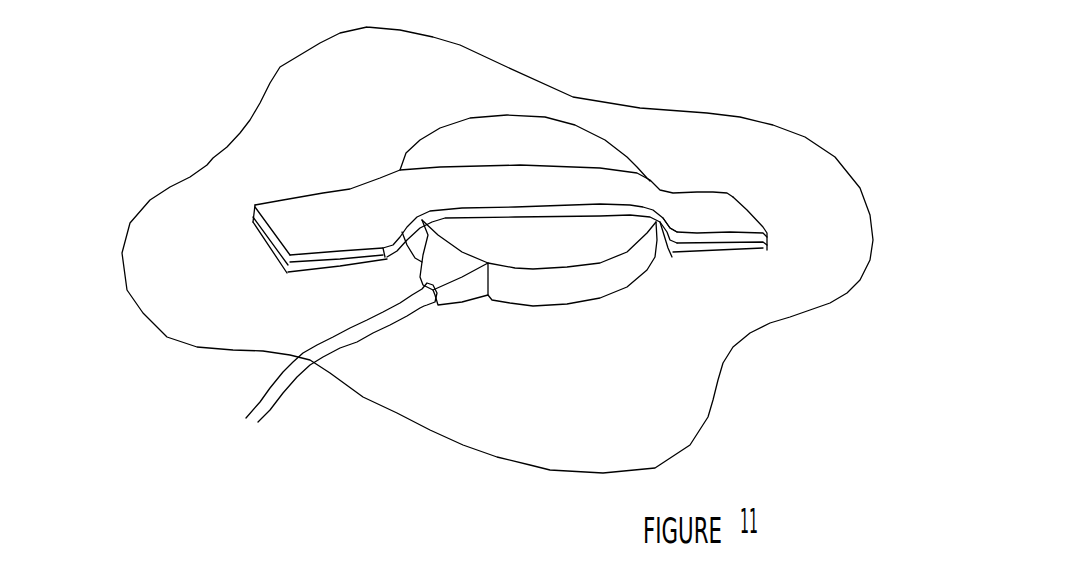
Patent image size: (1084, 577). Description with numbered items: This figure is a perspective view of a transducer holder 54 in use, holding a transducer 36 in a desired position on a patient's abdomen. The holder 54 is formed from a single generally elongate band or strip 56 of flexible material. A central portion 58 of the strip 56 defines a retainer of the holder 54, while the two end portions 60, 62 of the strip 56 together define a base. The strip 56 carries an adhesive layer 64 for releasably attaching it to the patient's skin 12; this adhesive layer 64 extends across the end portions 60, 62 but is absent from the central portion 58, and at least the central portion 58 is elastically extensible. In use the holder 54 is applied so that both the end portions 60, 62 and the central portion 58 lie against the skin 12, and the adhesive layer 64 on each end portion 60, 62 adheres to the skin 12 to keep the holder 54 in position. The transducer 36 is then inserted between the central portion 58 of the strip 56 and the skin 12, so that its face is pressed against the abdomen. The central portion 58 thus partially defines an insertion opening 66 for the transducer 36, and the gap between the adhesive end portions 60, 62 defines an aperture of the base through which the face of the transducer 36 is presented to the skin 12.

The patient's skin 12 is at (504, 250).
The transducer 36 is at (525, 108).
The transducer holder 54 is at (459, 211).
The strip 56 is at (469, 230).
The central portion 58 is at (511, 128).
The end portion 60 is at (206, 201).
The end portion 62 is at (721, 158).
The adhesive layer 64 is at (499, 307).
The insertion opening 66 is at (727, 310).